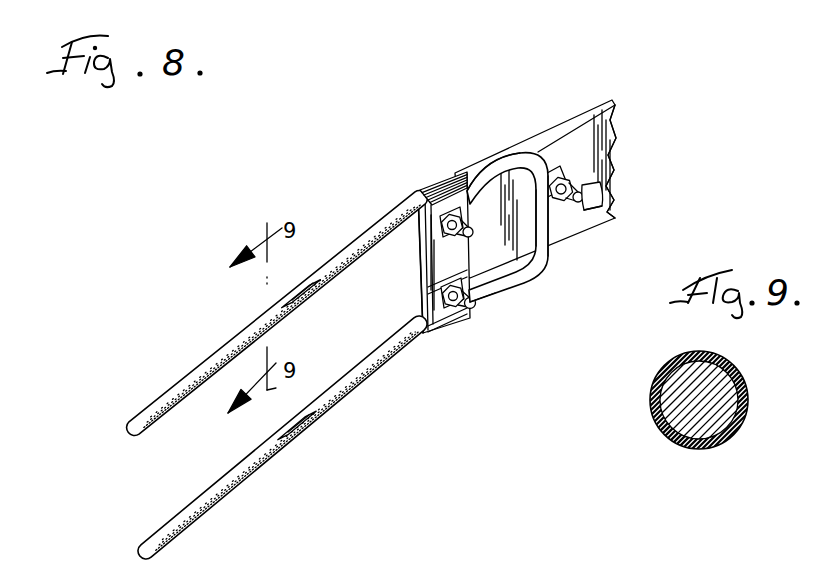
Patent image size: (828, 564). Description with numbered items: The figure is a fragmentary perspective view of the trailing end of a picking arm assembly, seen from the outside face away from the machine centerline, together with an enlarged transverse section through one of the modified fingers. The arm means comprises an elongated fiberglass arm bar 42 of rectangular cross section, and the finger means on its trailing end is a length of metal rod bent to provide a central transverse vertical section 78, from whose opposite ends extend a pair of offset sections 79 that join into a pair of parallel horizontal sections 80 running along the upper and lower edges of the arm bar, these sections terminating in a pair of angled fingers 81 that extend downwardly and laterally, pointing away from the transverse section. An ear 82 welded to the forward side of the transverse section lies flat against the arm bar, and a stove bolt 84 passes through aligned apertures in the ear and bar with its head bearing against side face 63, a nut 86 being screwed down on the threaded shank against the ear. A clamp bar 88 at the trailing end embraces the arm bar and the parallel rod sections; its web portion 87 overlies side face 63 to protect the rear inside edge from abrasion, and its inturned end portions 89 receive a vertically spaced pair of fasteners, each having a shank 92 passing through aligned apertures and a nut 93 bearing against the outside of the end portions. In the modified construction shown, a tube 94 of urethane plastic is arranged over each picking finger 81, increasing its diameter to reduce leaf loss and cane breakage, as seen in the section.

In FIG. 8, the arm bar 42 is at (571, 120).
In FIG. 8, the side face 63 is at (612, 148).
In FIG. 8, the central transverse vertical section 78 is at (548, 236).
In FIG. 8, the offset sections 79 is at (517, 153).
In FIG. 8, the parallel horizontal sections 80 is at (475, 168).
In FIG. 8, the angled fingers 81 is at (133, 440).
In FIG. 9, the angled fingers 81 is at (667, 412).
In FIG. 8, the ear 82 is at (567, 178).
In FIG. 8, the stove bolt 84 is at (605, 210).
In FIG. 8, the nut 86 is at (601, 190).
In FIG. 8, the web portion 87 is at (418, 270).
In FIG. 8, the clamp bar 88 is at (433, 184).
In FIG. 8, the inturned end portions 89 is at (420, 246).
In FIG. 8, the shank 92 is at (481, 294).
In FIG. 8, the nut 93 is at (466, 234).
In FIG. 8, the tube 94 is at (197, 500).
In FIG. 9, the tube 94 is at (743, 377).